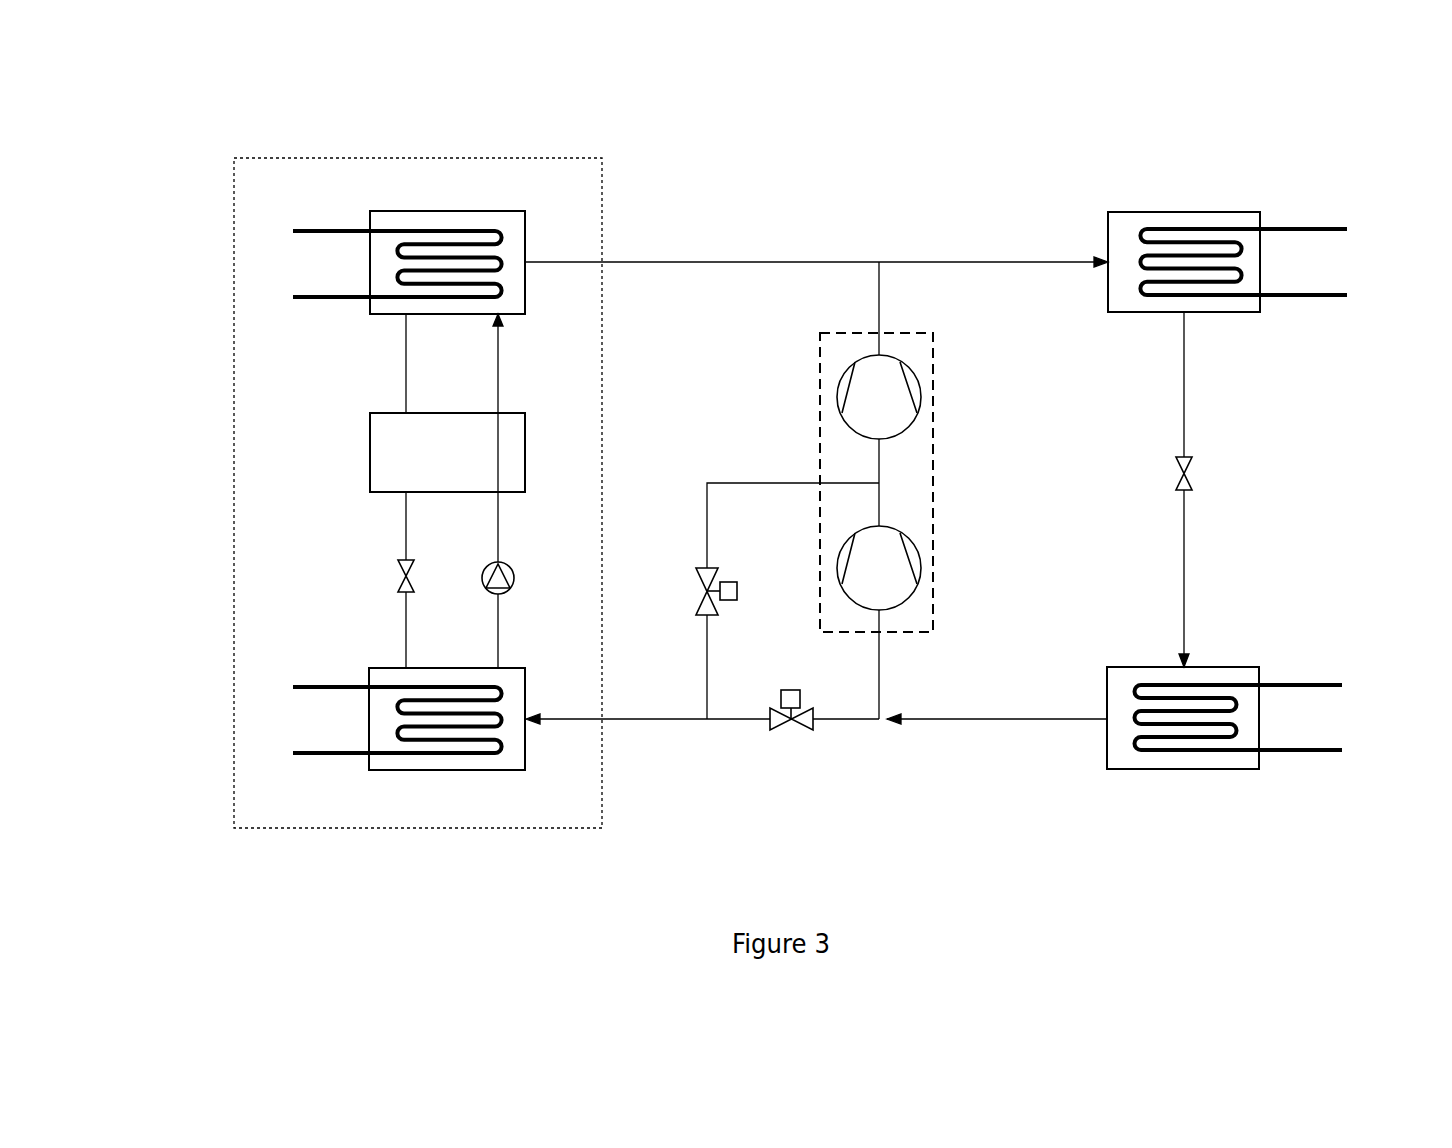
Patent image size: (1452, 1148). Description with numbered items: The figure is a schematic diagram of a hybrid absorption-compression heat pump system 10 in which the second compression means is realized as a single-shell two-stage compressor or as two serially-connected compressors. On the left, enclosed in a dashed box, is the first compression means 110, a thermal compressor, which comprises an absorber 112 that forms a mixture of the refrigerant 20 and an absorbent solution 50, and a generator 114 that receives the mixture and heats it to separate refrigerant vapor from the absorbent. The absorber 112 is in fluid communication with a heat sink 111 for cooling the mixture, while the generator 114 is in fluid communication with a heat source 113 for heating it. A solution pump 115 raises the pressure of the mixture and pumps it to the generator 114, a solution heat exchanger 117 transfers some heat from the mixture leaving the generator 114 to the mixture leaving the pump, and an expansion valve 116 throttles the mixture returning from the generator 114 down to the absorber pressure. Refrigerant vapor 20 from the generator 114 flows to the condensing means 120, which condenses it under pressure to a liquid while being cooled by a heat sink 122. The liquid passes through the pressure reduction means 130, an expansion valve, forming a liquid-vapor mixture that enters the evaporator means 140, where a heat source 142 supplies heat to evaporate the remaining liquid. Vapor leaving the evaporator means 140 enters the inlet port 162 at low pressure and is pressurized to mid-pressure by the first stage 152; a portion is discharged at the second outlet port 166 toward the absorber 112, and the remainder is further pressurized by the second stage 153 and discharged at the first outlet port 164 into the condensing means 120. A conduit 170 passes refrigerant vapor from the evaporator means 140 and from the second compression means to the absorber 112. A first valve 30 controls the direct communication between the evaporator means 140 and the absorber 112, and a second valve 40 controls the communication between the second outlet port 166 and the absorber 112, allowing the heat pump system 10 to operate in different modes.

The hybrid heat pump system 10 is at (1215, 92).
The refrigerant 20 is at (792, 250).
The first valve 30 is at (803, 729).
The second valve 40 is at (739, 643).
The solution 50 is at (407, 380).
The first compression means 110 is at (418, 469).
The heat sink 111 is at (382, 722).
The absorber 112 is at (458, 736).
The heat source 113 is at (374, 264).
The generator 114 is at (462, 243).
The solution pump 115 is at (536, 491).
The expansion valve 116 is at (353, 580).
The solution heat exchanger 117 is at (476, 452).
The condensing means 120 is at (1197, 243).
The heat sink 122 is at (1277, 262).
The pressure reduction means 130 is at (1248, 489).
The evaporator means 140 is at (1198, 735).
The heat source 142 is at (1285, 717).
The first stage 152 is at (889, 574).
The second stage 153 is at (878, 397).
The inlet port 162 is at (974, 664).
The first outlet port 164 is at (980, 308).
The second outlet port 166 is at (763, 501).
The conduit 170 is at (816, 736).